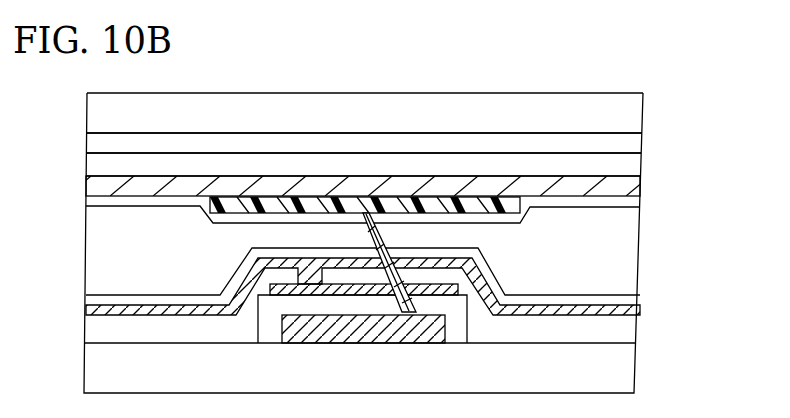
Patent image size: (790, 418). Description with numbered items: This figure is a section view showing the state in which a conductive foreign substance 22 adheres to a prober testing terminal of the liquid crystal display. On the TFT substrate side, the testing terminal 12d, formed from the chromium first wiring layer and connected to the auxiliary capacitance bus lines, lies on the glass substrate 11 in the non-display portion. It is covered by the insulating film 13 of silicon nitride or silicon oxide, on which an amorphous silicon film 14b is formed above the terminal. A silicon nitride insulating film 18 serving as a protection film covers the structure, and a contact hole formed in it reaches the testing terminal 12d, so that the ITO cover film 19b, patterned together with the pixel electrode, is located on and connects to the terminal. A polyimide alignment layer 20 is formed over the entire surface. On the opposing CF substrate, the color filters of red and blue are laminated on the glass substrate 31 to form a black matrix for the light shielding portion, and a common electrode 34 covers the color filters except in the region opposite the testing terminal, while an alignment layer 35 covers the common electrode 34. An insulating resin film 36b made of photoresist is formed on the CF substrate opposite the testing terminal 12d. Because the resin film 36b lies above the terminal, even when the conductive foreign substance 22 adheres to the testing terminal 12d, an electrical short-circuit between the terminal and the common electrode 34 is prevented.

The glass substrate 11 is at (637, 368).
The testing terminal 12d is at (395, 344).
The insulating film 13 is at (458, 344).
The amorphous silicon film 14b is at (272, 284).
The insulating film 18 is at (637, 330).
The cover film 19b is at (487, 287).
The alignment layer 20 is at (597, 294).
The conductive foreign substance 22 is at (383, 238).
The glass substrate 31 is at (640, 108).
The common electrode 34 is at (640, 188).
The alignment layer 35 is at (117, 208).
The insulating resin film 36b is at (508, 213).